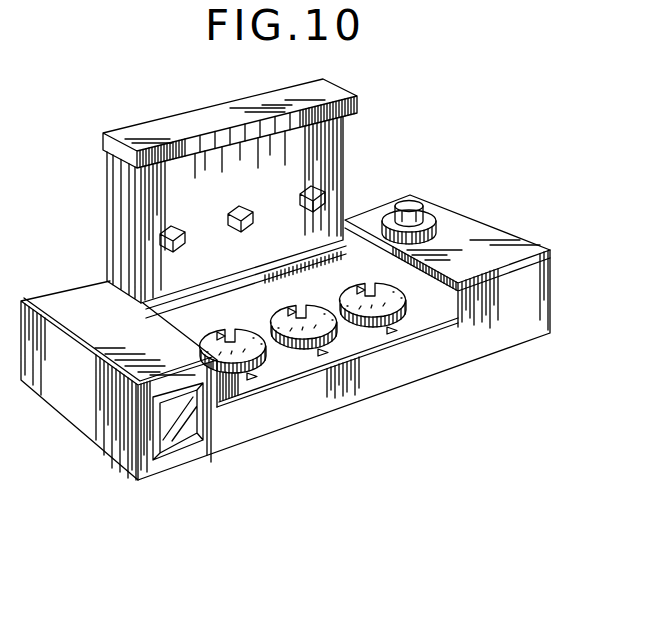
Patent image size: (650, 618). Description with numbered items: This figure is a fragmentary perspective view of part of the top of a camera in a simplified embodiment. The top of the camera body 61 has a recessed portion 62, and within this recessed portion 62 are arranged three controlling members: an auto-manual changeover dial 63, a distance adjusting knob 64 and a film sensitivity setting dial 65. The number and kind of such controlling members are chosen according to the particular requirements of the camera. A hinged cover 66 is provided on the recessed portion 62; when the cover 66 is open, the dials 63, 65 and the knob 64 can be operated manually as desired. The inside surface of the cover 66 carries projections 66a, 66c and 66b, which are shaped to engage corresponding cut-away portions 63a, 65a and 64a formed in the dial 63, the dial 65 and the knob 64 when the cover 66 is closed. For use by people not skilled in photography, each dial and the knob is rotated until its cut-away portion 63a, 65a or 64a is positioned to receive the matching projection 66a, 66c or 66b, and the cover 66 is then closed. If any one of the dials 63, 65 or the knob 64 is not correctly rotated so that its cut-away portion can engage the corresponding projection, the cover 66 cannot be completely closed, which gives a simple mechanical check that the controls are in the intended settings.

The camera body 61 is at (489, 235).
The recessed portion 62 is at (355, 346).
The auto-manual changeover dial 63 is at (236, 358).
The cut-away portion 63a is at (218, 336).
The distance adjusting knob 64 is at (305, 338).
The cut-away portion 64a is at (290, 312).
The film sensitivity setting dial 65 is at (381, 312).
The cut-away portion 65a is at (359, 291).
The hinged cover 66 is at (172, 124).
The projection 66a is at (177, 226).
The projection 66b is at (247, 198).
The projection 66c is at (310, 190).